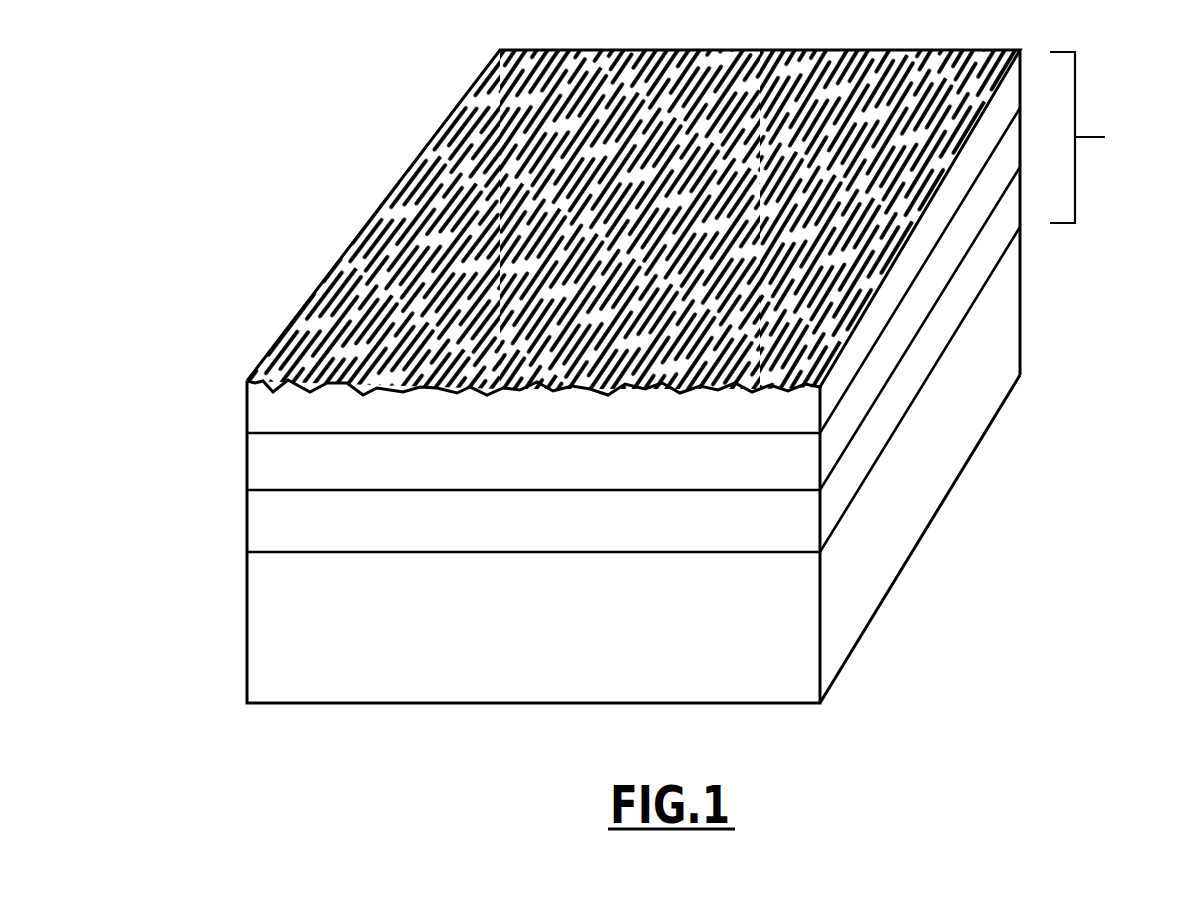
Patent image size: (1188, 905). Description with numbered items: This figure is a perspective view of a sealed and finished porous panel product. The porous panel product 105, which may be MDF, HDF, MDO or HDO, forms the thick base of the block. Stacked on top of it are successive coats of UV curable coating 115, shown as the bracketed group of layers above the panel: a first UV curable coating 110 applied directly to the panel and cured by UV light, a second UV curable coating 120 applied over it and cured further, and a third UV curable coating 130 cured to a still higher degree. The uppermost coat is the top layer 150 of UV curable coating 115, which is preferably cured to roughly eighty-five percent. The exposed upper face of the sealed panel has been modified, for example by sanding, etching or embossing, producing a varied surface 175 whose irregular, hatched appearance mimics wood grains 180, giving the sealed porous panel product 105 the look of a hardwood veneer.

The porous panel product 105 is at (260, 633).
The first UV curable coating 110 is at (258, 527).
The second UV curable coating 120 is at (257, 470).
The third UV curable coating 130 is at (258, 425).
The top layer 150 is at (257, 408).
The varied surface 175 is at (258, 404).
The wood grains 180 is at (412, 197).
The UV curable coating 115 is at (1097, 212).